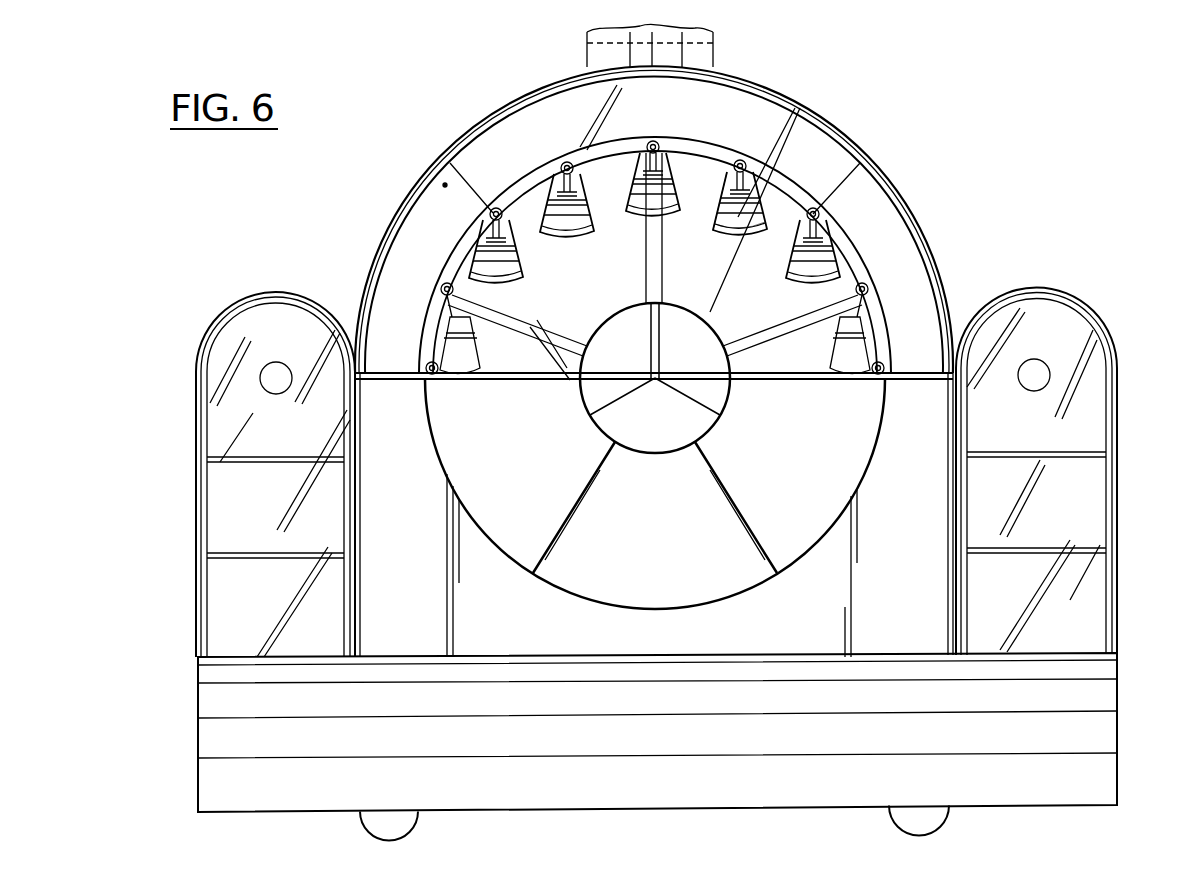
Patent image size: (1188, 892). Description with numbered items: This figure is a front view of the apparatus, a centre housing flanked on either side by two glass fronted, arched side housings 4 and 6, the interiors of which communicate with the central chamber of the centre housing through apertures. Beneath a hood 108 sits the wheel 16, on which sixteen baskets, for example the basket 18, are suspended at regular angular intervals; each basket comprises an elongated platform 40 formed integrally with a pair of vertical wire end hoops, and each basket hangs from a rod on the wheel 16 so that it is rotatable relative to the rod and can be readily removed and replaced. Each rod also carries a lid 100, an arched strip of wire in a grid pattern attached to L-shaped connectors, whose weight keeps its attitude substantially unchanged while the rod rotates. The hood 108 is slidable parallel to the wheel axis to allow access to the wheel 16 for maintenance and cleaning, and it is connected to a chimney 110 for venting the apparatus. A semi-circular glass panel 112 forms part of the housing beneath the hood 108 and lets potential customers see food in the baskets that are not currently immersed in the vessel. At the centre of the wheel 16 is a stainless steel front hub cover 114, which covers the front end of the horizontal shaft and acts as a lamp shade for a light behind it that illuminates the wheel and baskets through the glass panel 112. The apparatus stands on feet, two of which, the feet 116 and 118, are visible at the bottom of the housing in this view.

The side housing 4 is at (240, 298).
The side housing 6 is at (1095, 296).
The wheel 16 is at (655, 255).
The basket 18 is at (713, 237).
The platform 40 is at (742, 235).
The lid 100 is at (719, 222).
The hood 108 is at (893, 180).
The chimney 110 is at (714, 36).
The semi-circular glass panel 112 is at (445, 185).
The front hub cover 114 is at (612, 430).
The foot 116 is at (385, 825).
The foot 118 is at (920, 820).